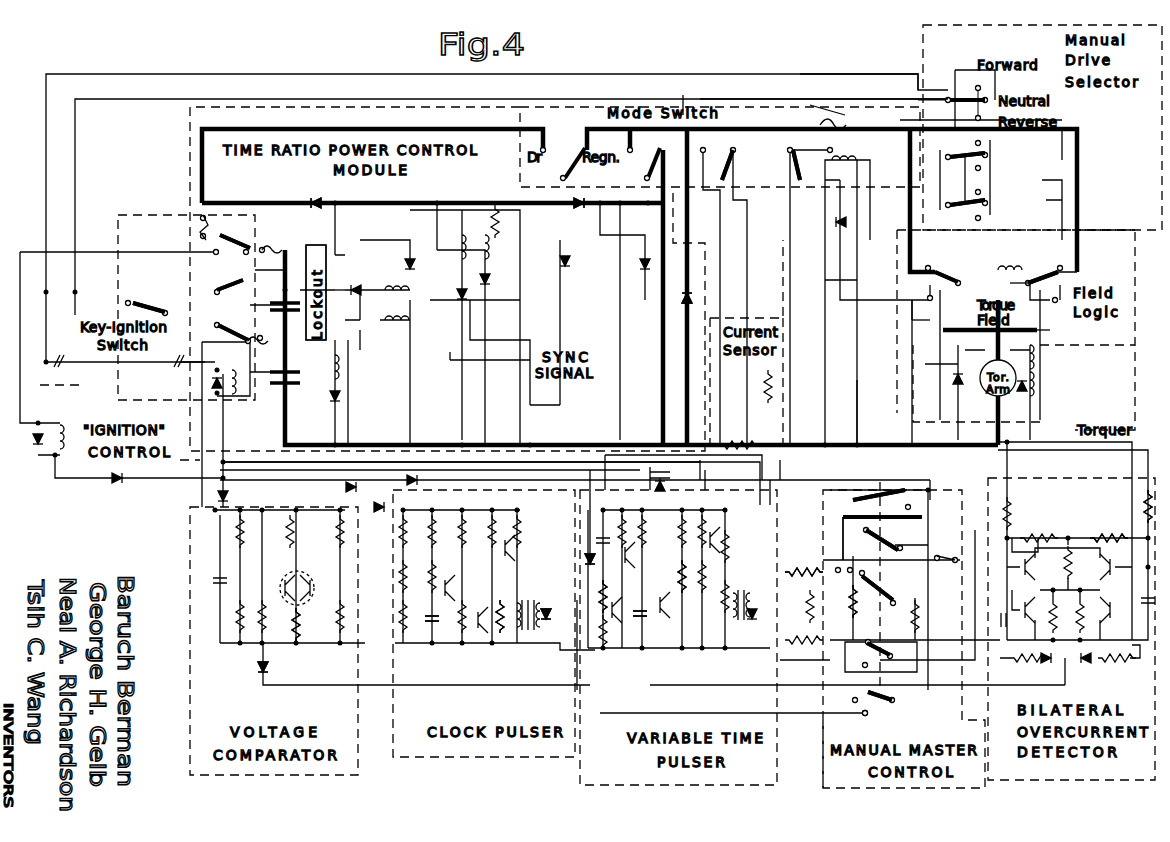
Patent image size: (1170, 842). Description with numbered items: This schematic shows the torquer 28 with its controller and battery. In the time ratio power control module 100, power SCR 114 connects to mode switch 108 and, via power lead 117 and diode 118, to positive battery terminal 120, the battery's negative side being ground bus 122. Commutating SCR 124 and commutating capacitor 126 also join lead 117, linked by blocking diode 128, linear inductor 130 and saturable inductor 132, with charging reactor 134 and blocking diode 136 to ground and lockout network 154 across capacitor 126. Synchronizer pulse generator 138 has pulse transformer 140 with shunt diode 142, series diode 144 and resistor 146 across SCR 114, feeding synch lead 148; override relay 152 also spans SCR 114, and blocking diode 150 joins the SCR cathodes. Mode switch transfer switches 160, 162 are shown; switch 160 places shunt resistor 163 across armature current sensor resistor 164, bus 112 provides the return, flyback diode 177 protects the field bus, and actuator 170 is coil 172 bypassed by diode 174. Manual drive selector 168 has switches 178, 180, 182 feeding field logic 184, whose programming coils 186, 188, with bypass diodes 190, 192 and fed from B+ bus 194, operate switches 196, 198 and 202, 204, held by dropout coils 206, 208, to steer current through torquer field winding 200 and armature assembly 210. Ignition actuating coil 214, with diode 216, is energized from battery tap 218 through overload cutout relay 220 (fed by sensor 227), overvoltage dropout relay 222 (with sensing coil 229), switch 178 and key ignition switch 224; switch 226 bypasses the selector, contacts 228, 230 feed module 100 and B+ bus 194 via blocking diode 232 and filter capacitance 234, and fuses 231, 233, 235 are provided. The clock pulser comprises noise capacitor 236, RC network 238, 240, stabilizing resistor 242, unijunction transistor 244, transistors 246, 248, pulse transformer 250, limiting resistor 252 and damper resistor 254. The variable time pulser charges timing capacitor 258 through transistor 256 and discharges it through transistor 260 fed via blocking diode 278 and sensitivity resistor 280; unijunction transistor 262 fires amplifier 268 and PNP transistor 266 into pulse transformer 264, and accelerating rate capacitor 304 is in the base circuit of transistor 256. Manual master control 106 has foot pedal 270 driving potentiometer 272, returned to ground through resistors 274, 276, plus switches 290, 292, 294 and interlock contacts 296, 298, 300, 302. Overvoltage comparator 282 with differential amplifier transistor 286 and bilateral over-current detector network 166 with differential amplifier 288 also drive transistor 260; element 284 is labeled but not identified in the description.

The time ratio power control module 100 is at (410, 113).
The mode switch 108 is at (835, 99).
The manual drive selector control 168 is at (918, 74).
The manual selector switch 178 is at (965, 80).
The fuse 235 is at (835, 125).
The coil 172 is at (920, 128).
The transfer switch 162 is at (809, 165).
The electromagnetic actuator 170 is at (832, 190).
The diode 174 is at (850, 222).
The transfer switch 160 is at (745, 163).
The switch 180 is at (965, 160).
The switch 182 is at (990, 197).
The field logic 184 is at (1085, 230).
The switch 198 is at (955, 252).
The torquer field winding 200 is at (998, 270).
The torquer 28 is at (1025, 272).
The switch 204 is at (1062, 266).
The switch 202 is at (1066, 270).
The switch 196 is at (935, 290).
The zero current dropout coil 206 is at (945, 312).
The zero current dropout coil 208 is at (1050, 333).
The programming coil 188 is at (1040, 360).
The diode 192 is at (1040, 378).
The armature assembly 210 is at (1025, 400).
The diode 190 is at (925, 376).
The programming coil 186 is at (940, 382).
The ground bus 122 is at (900, 445).
The flyback diode 177 is at (680, 315).
The bus 112 is at (660, 400).
The shunt resistor 163 is at (765, 380).
The armature current sensor resistor 164 is at (757, 425).
The filter capacitance 234 is at (670, 475).
The diode 118 is at (330, 190).
The power lead 117 is at (425, 195).
The diode 142 is at (495, 205).
The pulse transformer 140 is at (490, 225).
The resistor 146 is at (495, 232).
The power transmissive SCR 114 is at (575, 203).
The blocking diode 150 is at (645, 255).
The foot pedal actuated override relay 152 is at (560, 250).
The diode 144 is at (500, 290).
The synchronizer pulse generator 138 is at (468, 290).
The synch signal output lead 148 is at (455, 362).
The commutating SCR 124 is at (412, 255).
The commutating capacitor 126 is at (343, 285).
The commutating linear inductor 130 is at (395, 275).
The blocking diode 128 is at (363, 283).
The commutating saturable inductor 132 is at (380, 325).
The charging reactor 134 is at (345, 380).
The blocking diode 136 is at (345, 402).
The lockout network 154 is at (330, 250).
The positive terminal 120 is at (276, 294).
The fuse 231 is at (272, 247).
The switch 228 is at (235, 240).
The current or temperature sensor 227 is at (200, 228).
The switch 226 is at (236, 275).
The key ignition switch 224 is at (140, 295).
The switch 230 is at (228, 320).
The fuse 233 is at (272, 342).
The tap 218 is at (277, 366).
The overspeed overvoltage dropout relay 222 is at (70, 362).
The power current overload cutout relay 220 is at (178, 365).
The sensing coil 229 is at (70, 425).
The diode 216 is at (210, 385).
The actuating coil 214 is at (243, 396).
The blocking buffering diode 232 is at (110, 478).
The B+ bus 194 is at (200, 460).
The resistor 238 is at (395, 510).
The PNP transistor 248 is at (515, 543).
The limiting resistor 252 is at (546, 605).
The resistor 242 is at (400, 575).
The capacitor 236 is at (398, 595).
The capacitor 240 is at (417, 639).
The unijunction transistor 244 is at (451, 619).
The damper resistor 254 is at (496, 631).
The pulse transformer 250 is at (528, 635).
The transistor 246 is at (478, 635).
The conductor 284 is at (575, 650).
The sensitivity control resistor 280 is at (590, 625).
The transistor 260 is at (615, 660).
The rate determining capacitor 258 is at (645, 660).
The unijunction transistor 262 is at (666, 648).
The transistor amplifier 268 is at (735, 648).
The transistor 256 is at (635, 550).
The blocking diode 278 is at (618, 590).
The accelerating rate capacitor 304 is at (675, 585).
The PNP transistor 266 is at (720, 540).
The resistor 274 is at (801, 561).
The pulse transformer 264 is at (797, 606).
The resistor 276 is at (810, 660).
The foot pedal 270 is at (884, 497).
The switch 290 is at (892, 534).
The normally closed switch contact 300 is at (842, 538).
The normally open auxiliary switch contact 298 is at (890, 580).
The switch 296 is at (948, 562).
The potentiometer 272 is at (879, 608).
The normally closed switch 302 is at (885, 640).
The switch 292 is at (880, 690).
The switch 294 is at (870, 705).
The manual master control 106 is at (822, 725).
The bilateral over-current detector network 166 is at (1148, 490).
The differential amplifier 288 is at (1072, 575).
The overvoltage signal comparator 282 is at (200, 645).
The differential amplifier transistor 286 is at (310, 639).